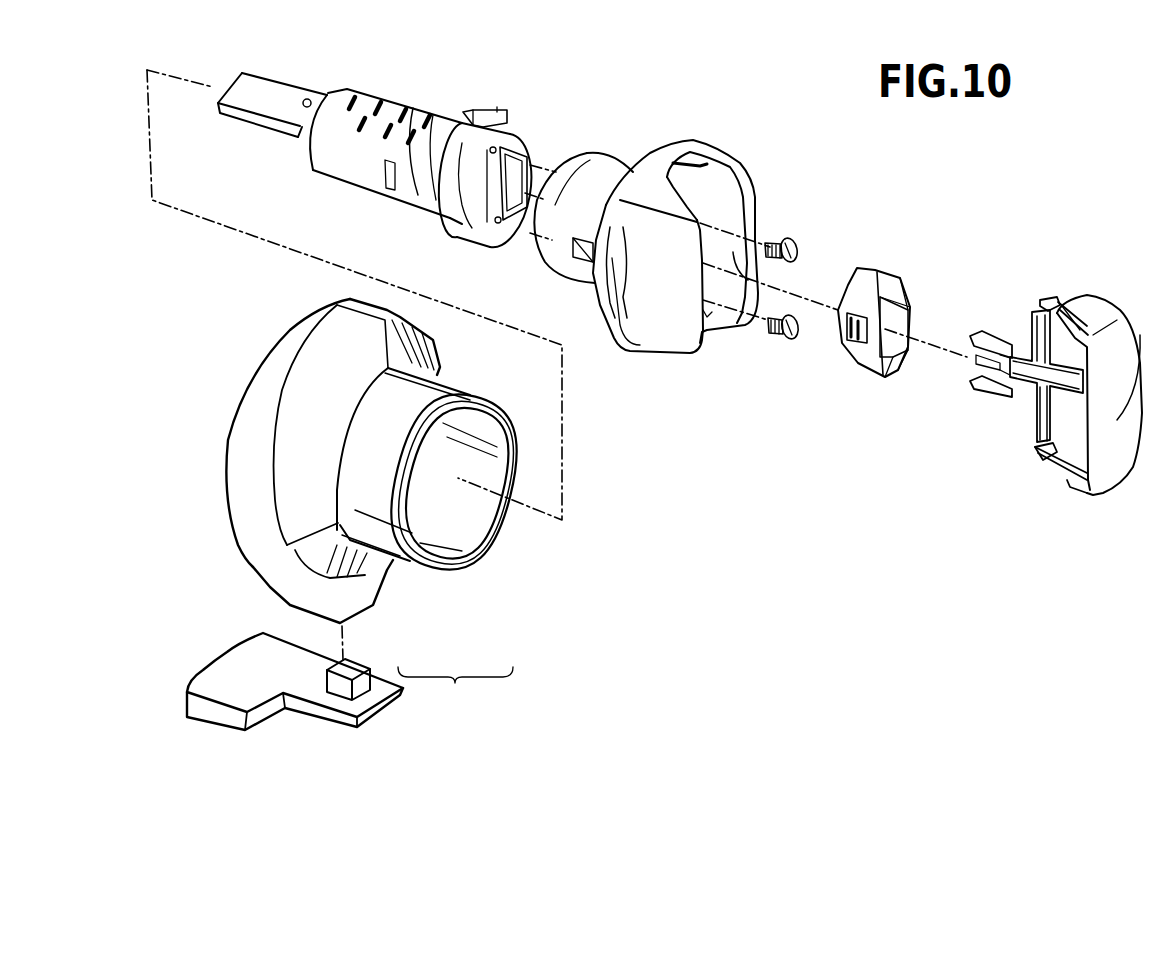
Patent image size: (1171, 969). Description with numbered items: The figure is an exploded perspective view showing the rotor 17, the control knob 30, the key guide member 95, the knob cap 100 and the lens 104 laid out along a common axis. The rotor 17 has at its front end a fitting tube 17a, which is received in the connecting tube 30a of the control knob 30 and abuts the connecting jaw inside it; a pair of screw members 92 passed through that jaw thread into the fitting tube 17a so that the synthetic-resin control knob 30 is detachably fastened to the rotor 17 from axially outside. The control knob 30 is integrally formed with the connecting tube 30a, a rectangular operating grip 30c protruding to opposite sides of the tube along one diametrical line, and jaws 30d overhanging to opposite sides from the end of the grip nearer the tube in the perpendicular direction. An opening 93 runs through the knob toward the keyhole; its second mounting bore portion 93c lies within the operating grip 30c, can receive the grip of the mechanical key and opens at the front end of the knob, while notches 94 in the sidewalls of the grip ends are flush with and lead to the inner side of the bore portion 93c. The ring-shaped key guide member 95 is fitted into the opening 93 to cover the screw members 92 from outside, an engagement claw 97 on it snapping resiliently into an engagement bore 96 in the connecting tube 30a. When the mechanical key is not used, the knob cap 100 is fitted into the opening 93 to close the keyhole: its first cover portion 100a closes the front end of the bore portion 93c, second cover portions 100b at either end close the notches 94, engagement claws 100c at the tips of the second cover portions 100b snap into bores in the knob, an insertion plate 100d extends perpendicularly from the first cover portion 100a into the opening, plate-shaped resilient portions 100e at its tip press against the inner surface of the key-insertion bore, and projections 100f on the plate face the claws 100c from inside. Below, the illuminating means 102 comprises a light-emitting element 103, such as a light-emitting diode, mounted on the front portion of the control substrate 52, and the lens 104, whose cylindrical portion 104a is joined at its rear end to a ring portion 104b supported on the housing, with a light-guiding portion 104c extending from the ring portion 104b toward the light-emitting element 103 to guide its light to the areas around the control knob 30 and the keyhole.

The rotor 17 is at (325, 157).
The fitting tube 17a is at (473, 200).
The control knob 30 is at (683, 251).
The connecting tube 30a is at (580, 205).
The operating grip 30c is at (677, 337).
The jaws 30d is at (605, 320).
The control substrate 52 is at (240, 677).
The screw members 92 is at (782, 242).
The opening 93 is at (722, 216).
The second mounting bore portion 93c is at (735, 255).
The notches 94 is at (717, 180).
The key guide member 95 is at (867, 315).
The engagement bore 96 is at (590, 247).
The engagement claw 97 is at (843, 333).
The knob cap 100 is at (1041, 374).
The first cover portion 100a is at (1141, 305).
The second cover portions 100b is at (1080, 300).
The engagement claws 100c is at (1040, 300).
The insertion plate 100d is at (1010, 400).
The resilient portions 100e is at (973, 337).
The projections 100f is at (1030, 340).
The illuminating means 102 is at (455, 687).
The light-emitting element 103 is at (352, 668).
The lens 104 is at (363, 483).
The cylindrical portion 104a is at (483, 540).
The ring portion 104b is at (280, 363).
The light-guiding portion 104c is at (300, 592).